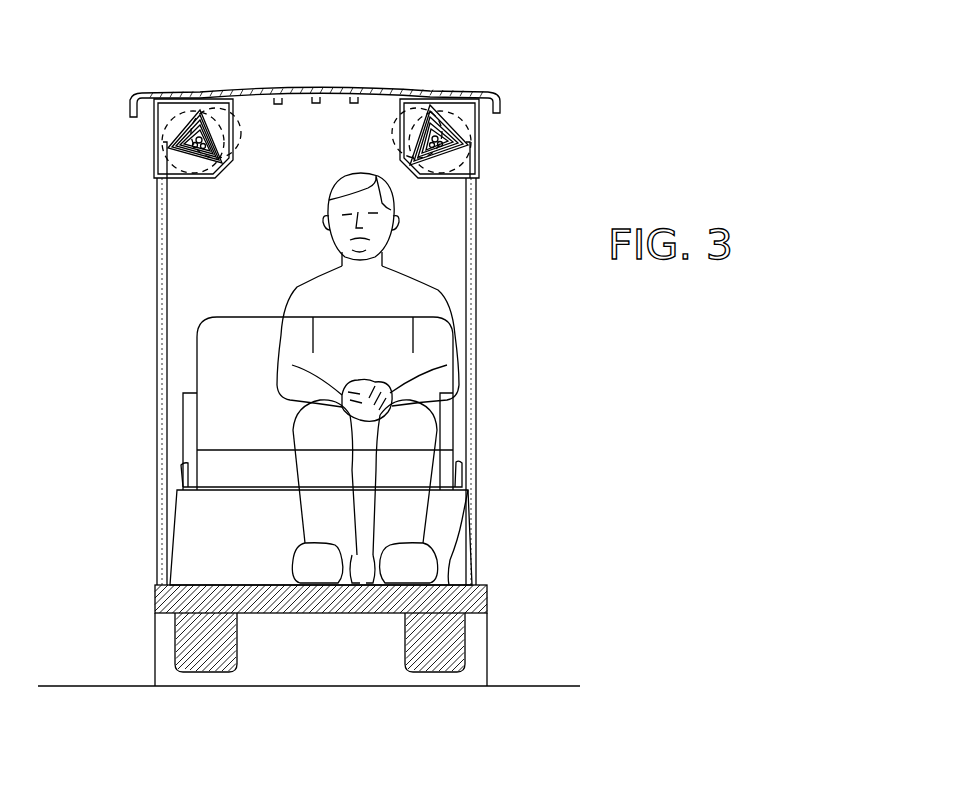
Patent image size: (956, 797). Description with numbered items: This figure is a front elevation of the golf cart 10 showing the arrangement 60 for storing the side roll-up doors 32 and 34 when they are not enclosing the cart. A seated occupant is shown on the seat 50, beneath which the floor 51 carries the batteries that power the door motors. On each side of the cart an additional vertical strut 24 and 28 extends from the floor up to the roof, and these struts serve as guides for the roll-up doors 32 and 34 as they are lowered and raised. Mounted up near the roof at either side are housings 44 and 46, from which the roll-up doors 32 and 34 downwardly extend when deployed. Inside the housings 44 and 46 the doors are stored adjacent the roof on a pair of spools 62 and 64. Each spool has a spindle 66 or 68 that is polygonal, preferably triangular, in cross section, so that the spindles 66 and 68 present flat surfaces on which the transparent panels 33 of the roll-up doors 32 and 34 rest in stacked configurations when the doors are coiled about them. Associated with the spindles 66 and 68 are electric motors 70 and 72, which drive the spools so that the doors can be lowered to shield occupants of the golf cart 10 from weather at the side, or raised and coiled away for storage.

The golf cart 10 is at (210, 532).
The vertical strut 24 is at (157, 282).
The vertical strut 28 is at (473, 338).
The roll-up door 32 is at (183, 98).
The panels 33 is at (193, 162).
The roll-up door 34 is at (480, 131).
The housing 44 is at (171, 141).
The housing 46 is at (458, 179).
The seat 50 is at (246, 384).
The floor 51 is at (447, 582).
The arrangement 60 is at (208, 106).
The spool 62 is at (157, 133).
The spool 64 is at (403, 122).
The spindle 66 is at (217, 100).
The spindle 68 is at (423, 167).
The electric motor 70 is at (222, 142).
The electric motor 72 is at (453, 167).